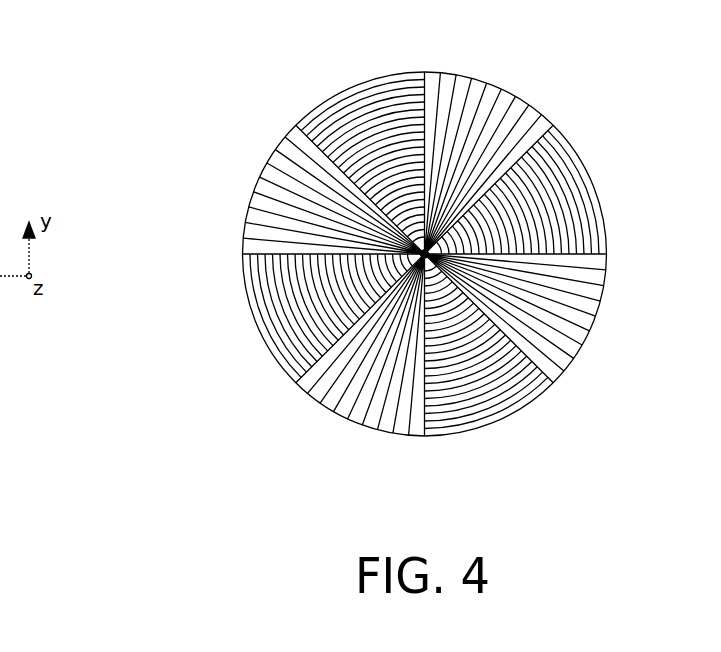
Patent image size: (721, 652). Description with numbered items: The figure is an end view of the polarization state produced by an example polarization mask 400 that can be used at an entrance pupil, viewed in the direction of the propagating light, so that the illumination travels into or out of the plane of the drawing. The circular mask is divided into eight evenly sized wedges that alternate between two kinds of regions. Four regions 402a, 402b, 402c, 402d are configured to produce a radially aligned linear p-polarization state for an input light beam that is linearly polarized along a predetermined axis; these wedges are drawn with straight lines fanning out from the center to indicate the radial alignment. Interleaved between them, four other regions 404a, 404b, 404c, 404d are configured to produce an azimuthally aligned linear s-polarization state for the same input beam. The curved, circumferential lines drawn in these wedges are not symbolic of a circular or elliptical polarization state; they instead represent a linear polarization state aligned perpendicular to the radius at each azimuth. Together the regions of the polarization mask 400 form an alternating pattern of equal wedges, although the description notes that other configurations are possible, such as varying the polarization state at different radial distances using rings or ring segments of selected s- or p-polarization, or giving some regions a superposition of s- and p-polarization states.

The polarization mask 400 is at (140, 58).
The region 402a is at (503, 110).
The region 402b is at (567, 313).
The region 402c is at (342, 383).
The region 402d is at (287, 198).
The region 404a is at (377, 95).
The region 404b is at (558, 183).
The region 404c is at (493, 395).
The region 404d is at (268, 300).